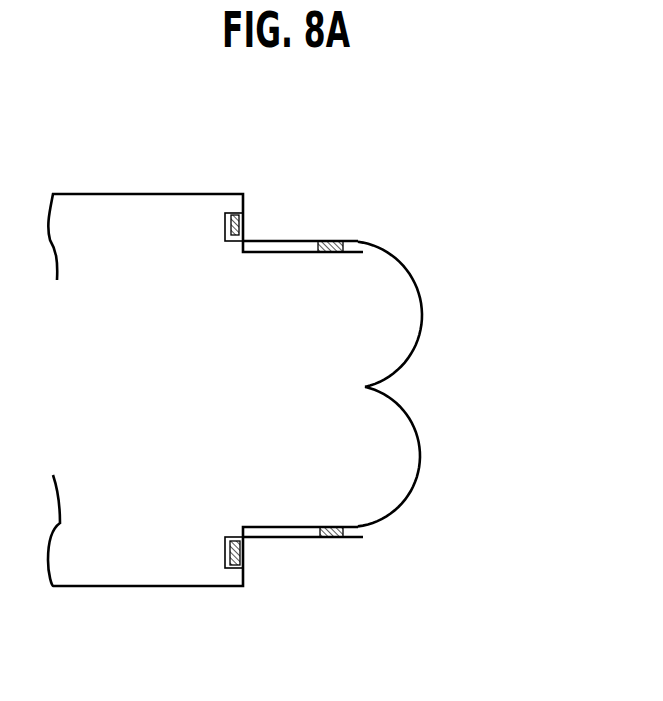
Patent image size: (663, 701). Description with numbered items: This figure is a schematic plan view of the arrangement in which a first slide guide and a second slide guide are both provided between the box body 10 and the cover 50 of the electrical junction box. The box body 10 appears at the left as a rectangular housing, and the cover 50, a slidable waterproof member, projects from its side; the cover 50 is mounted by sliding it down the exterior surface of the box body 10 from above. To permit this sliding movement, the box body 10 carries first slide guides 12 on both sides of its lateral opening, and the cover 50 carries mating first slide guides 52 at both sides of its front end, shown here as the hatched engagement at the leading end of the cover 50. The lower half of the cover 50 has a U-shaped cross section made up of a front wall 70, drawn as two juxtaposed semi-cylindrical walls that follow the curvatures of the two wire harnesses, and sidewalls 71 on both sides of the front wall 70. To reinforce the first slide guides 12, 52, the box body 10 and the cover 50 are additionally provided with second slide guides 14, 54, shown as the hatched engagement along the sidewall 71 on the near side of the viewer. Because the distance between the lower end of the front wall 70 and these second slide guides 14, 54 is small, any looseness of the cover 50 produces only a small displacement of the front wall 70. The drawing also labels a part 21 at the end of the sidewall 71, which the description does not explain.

The box body 10 is at (167, 193).
The first slide guide 12 is at (314, 196).
The first slide guide 52 is at (243, 225).
The cover 50 is at (427, 273).
The front wall 70 is at (420, 460).
The lower arm end 21 is at (357, 538).
The sidewall 71 is at (280, 538).
The second slide guide 14 is at (351, 603).
The second slide guide 54 is at (340, 538).